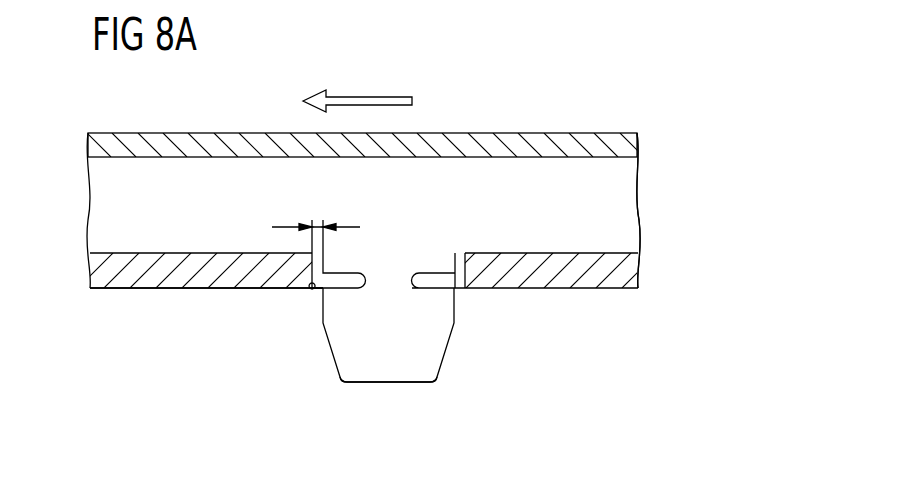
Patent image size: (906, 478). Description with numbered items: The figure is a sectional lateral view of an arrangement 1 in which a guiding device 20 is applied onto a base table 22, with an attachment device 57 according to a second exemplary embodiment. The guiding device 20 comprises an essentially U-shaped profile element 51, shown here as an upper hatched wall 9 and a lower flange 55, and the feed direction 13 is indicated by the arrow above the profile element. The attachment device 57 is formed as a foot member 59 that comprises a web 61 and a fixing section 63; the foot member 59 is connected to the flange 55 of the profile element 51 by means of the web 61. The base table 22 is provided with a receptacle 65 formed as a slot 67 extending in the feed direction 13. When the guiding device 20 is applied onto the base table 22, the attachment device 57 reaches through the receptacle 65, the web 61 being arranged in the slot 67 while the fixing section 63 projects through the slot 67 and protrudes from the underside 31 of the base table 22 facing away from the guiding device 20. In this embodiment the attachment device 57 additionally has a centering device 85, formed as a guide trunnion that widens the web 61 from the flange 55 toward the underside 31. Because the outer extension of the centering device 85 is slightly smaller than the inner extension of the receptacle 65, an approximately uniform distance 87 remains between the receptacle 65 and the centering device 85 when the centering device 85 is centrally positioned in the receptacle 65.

The electrical machine / stator arrangement 1 is at (391, 241).
The first wall / cover layer 9 is at (484, 144).
The feed direction 13 is at (366, 96).
The guiding device 20 is at (683, 205).
The U-shaped profile element 51 is at (648, 185).
The flange 55 is at (527, 216).
The base table 22 is at (120, 291).
The underside 31 is at (198, 297).
The distance 87 is at (314, 222).
The centering device 85 is at (325, 258).
The receptacle 65 is at (280, 313).
The slot 67 is at (311, 290).
The web 61 is at (414, 272).
The attachment device 57 is at (464, 335).
The foot member 59 is at (487, 330).
The fixing section 63 is at (408, 388).